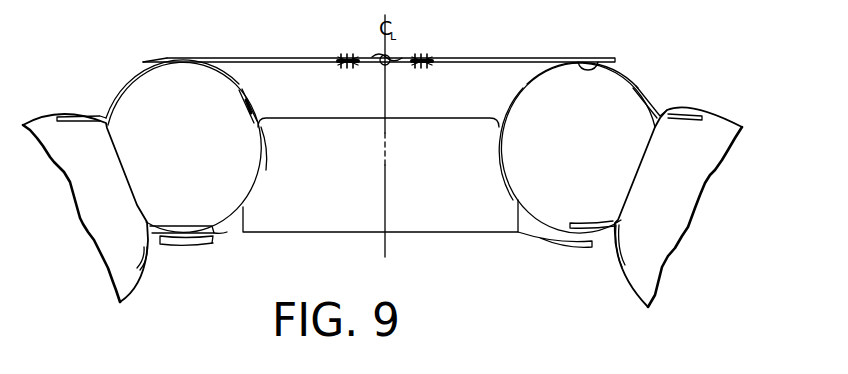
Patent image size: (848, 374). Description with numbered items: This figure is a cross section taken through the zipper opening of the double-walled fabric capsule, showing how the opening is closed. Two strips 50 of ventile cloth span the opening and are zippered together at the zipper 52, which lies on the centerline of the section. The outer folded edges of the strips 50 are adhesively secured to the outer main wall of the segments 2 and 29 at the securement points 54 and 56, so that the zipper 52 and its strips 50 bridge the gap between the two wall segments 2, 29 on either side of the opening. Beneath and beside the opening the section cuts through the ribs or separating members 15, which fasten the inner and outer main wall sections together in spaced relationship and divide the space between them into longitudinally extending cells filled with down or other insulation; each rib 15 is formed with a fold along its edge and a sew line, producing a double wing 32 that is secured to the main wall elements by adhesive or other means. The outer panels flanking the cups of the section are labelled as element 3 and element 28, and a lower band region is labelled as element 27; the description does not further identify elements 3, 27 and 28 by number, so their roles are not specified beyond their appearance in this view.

The segment 2 is at (156, 92).
The side wing 3 is at (52, 134).
The rib 15 is at (135, 190).
The lower band 27 is at (227, 237).
The side wing 28 is at (728, 140).
The segment 29 is at (613, 93).
The double wing 32 is at (666, 110).
The strip of ventile cloth 50 is at (517, 58).
The zipper 52 is at (390, 56).
The adhesive securement 54 is at (603, 62).
The adhesive securement 56 is at (178, 62).